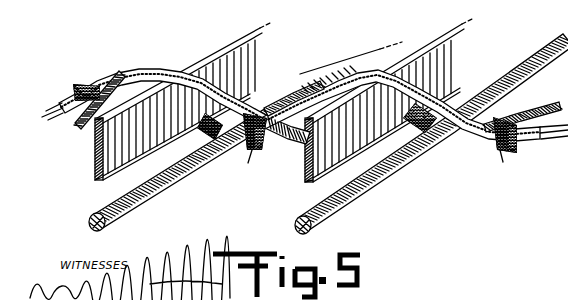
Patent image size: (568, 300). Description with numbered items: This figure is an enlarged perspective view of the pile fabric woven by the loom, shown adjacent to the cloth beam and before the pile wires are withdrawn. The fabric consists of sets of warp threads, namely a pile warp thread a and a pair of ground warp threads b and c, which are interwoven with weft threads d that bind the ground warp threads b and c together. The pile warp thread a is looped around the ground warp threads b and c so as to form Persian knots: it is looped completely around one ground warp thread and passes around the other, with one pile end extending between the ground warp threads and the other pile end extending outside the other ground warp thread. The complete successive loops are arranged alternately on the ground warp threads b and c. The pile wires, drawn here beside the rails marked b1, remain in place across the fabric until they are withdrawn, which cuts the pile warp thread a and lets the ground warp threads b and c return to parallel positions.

The pile warp thread a is at (57, 112).
The ground warp thread b is at (90, 86).
The rail of lattice panel b1 is at (246, 44).
The ground warp thread c is at (120, 76).
The weft thread d is at (149, 200).